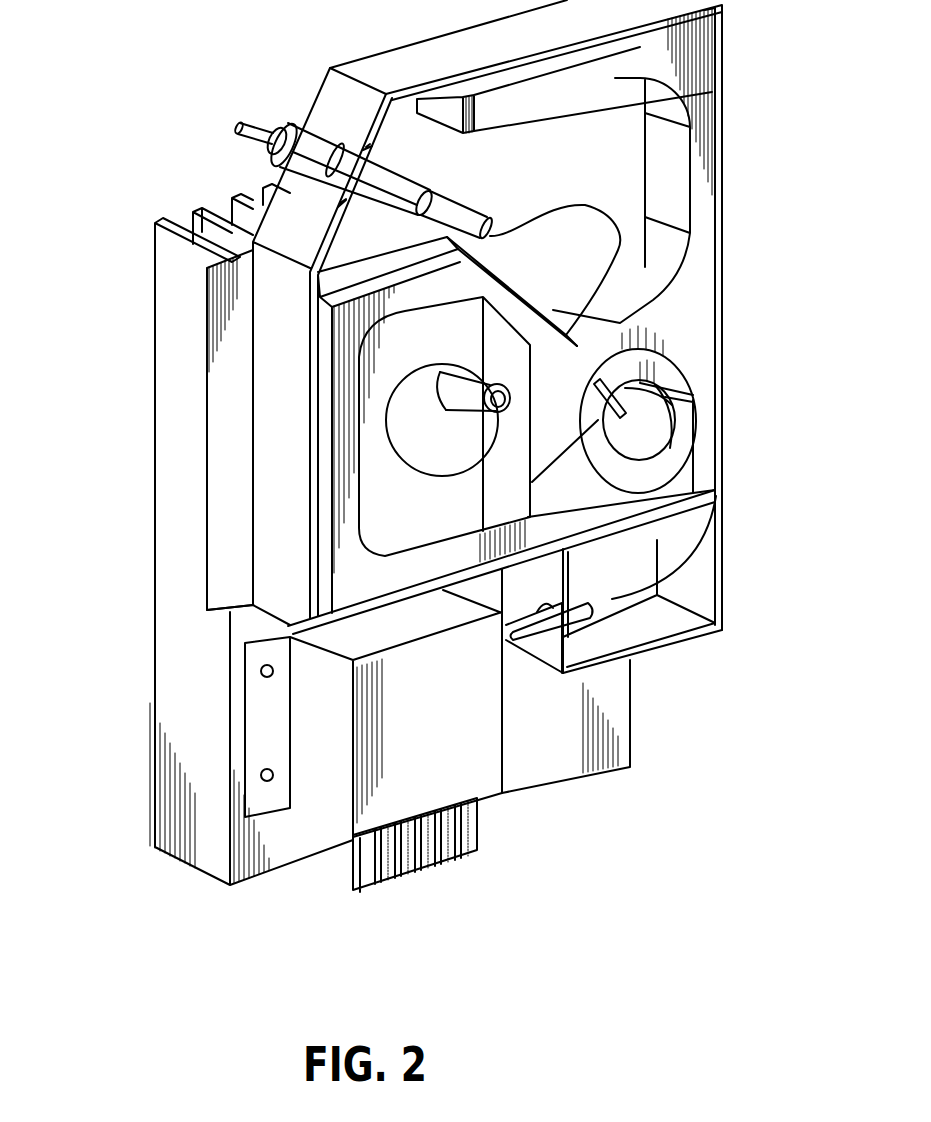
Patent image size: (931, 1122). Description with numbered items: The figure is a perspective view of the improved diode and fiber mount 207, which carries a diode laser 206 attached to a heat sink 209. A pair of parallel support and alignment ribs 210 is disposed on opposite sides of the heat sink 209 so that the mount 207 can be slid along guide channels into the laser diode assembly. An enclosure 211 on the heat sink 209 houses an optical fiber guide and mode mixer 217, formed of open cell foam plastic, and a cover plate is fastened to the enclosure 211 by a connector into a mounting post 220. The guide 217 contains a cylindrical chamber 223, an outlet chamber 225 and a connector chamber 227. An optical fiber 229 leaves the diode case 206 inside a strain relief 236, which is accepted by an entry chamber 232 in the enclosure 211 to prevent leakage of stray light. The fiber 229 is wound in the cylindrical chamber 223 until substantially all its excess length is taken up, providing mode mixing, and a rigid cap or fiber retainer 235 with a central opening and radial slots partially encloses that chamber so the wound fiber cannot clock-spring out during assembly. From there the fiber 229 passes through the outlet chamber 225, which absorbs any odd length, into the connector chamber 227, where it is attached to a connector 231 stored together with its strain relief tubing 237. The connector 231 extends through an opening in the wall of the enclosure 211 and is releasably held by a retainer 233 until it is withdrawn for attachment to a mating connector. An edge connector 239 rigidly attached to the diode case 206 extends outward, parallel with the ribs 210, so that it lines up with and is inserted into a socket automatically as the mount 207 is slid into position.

The diode laser 206 is at (440, 749).
The diode and fiber mount 207 is at (186, 141).
The heat sink 209 is at (158, 522).
The support and alignment rib 210 is at (215, 417).
The enclosure 211 is at (724, 196).
The optical fiber guide and mode mixer 217 is at (707, 312).
The mounting post 220 is at (445, 378).
The cylindrical chamber 223 is at (597, 390).
The outlet chamber 225 is at (450, 456).
The connector chamber 227 is at (564, 183).
The optical fiber 229 is at (587, 217).
The connector 231 is at (306, 178).
The entry chamber 232 is at (624, 584).
The retainer 233 is at (366, 148).
The fiber retainer 235 is at (622, 483).
The strain relief 236 is at (530, 625).
The strain relief tubing 237 is at (395, 182).
The edge connector 239 is at (478, 846).